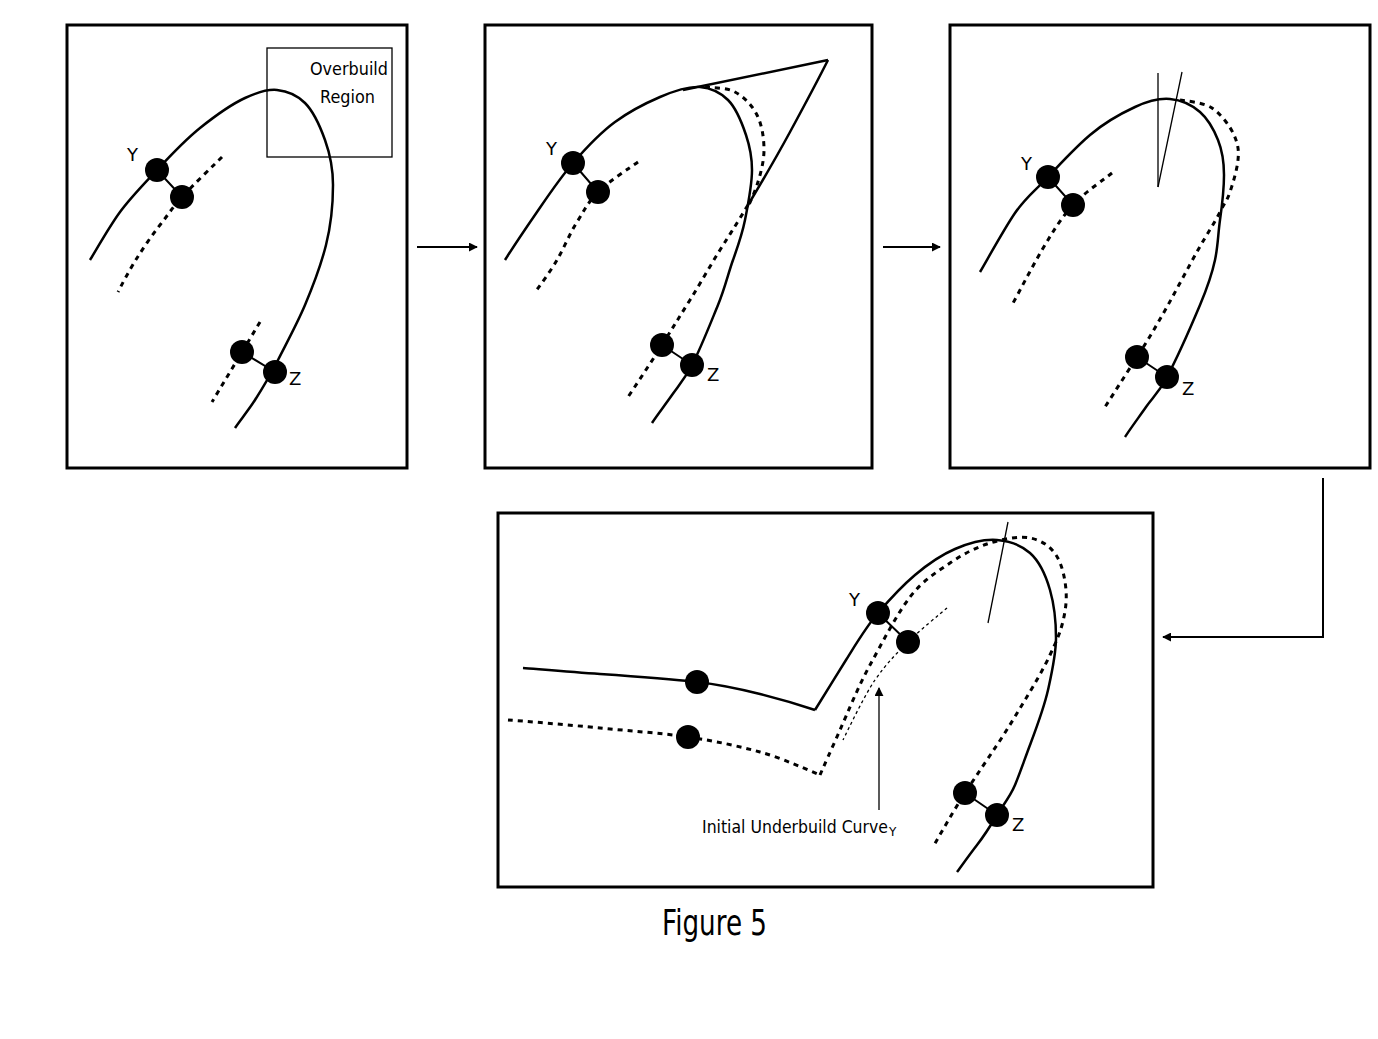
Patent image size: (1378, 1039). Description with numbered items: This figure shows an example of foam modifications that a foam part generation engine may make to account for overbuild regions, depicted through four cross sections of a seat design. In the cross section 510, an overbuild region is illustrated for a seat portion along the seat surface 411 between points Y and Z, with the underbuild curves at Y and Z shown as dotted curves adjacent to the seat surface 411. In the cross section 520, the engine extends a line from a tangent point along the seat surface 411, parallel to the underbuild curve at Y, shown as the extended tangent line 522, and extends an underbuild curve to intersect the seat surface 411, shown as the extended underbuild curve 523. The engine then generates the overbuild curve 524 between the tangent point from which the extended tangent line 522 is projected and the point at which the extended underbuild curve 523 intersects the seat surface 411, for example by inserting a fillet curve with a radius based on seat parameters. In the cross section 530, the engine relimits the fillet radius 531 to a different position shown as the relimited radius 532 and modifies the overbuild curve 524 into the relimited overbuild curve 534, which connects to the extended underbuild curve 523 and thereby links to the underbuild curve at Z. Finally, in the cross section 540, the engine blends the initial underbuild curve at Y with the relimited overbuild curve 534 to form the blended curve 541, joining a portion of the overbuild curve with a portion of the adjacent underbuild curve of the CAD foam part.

The seat surface 411 is at (190, 125).
The cross section 510 is at (88, 468).
The cross section 520 is at (506, 468).
The extended tangent line 522 is at (758, 71).
The extended underbuild curve 523 is at (742, 230).
The overbuild curve 524 is at (743, 103).
The cross section 530 is at (971, 468).
The fillet radius 531 is at (1156, 95).
The relimited radius 532 is at (1207, 64).
The relimited overbuild curve 534 is at (1240, 163).
The cross section 540 is at (965, 887).
The blended curve 541 is at (918, 595).